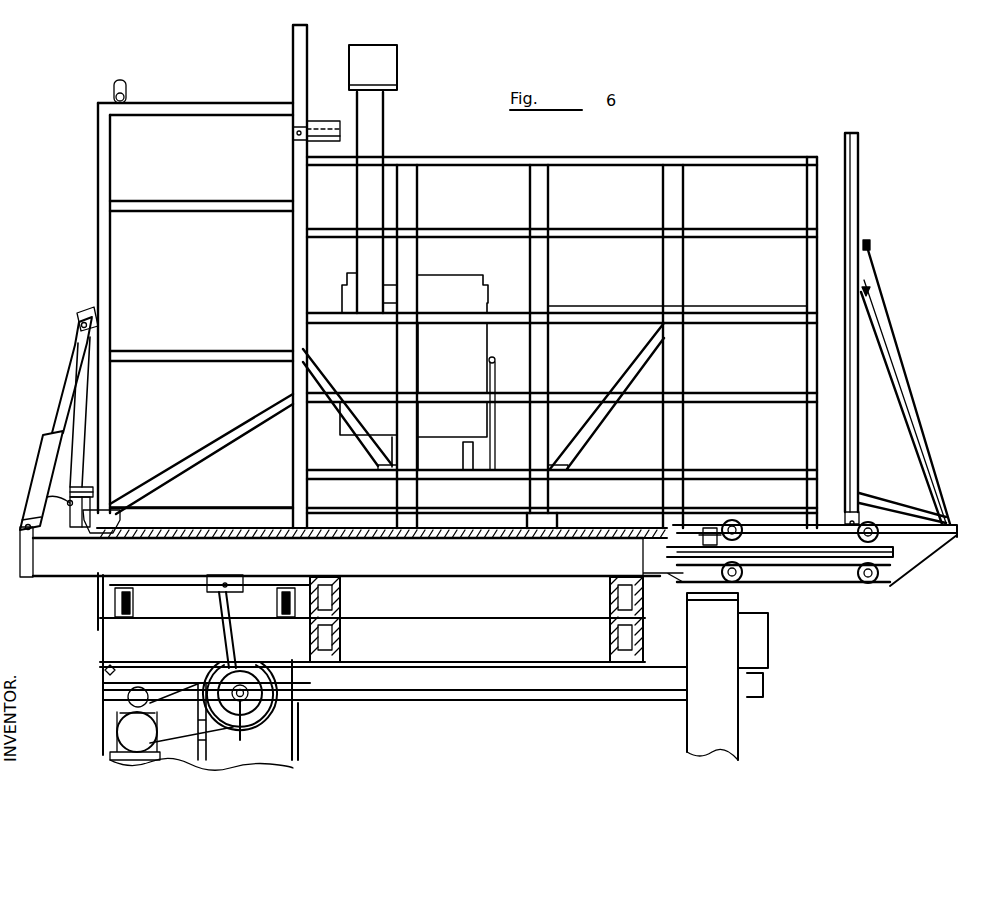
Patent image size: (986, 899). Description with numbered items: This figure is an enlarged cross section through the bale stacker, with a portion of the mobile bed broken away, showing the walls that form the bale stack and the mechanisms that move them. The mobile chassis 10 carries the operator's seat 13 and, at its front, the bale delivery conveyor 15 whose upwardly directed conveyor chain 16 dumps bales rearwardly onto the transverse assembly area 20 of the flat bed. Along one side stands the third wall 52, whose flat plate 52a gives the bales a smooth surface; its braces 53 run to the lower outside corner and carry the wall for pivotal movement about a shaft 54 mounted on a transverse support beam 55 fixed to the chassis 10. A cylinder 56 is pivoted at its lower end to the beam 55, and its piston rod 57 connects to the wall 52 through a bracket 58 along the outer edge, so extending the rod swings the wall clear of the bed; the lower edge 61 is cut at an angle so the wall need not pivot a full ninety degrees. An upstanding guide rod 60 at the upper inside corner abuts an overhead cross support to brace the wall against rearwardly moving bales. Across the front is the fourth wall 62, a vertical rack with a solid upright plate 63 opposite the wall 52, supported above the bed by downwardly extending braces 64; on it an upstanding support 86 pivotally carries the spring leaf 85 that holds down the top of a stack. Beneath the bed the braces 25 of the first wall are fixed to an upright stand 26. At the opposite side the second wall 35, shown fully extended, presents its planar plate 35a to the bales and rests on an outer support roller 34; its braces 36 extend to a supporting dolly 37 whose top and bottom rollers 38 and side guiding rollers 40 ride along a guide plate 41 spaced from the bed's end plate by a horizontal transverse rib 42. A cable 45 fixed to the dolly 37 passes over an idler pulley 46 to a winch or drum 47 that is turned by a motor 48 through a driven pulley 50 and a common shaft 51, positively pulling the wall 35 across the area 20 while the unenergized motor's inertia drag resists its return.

The mobile chassis 10 is at (340, 632).
The seat 13 is at (451, 367).
The bale delivery conveyor 15 is at (299, 734).
The conveyor chain 16 is at (197, 749).
The transverse assembly area 20 is at (337, 538).
The braces 25 is at (87, 401).
The upright stand 26 is at (86, 533).
The outer support roller 34 is at (846, 518).
The second wall 35 is at (859, 197).
The planar plate 35a is at (850, 208).
The braces 36 is at (918, 446).
The supporting dolly 37 is at (816, 576).
The top and bottom rollers 38 is at (733, 520).
The side guiding rollers 40 is at (706, 532).
The guide plate 41 is at (889, 567).
The horizontal transverse rib 42 is at (893, 552).
The cable 45 is at (217, 636).
The idler pulley 46 is at (226, 594).
The winch or drum 47 is at (256, 692).
The motor 48 is at (150, 743).
The driven pulley 50 is at (265, 668).
The common shaft 51 is at (240, 741).
The third wall 52 is at (97, 233).
The flat plate 52a is at (212, 303).
The braces 53 is at (206, 113).
The shaft 54 is at (47, 497).
The transverse support beam 55 is at (56, 578).
The cylinder 56 is at (46, 455).
The piston rod 57 is at (72, 362).
The bracket 58 is at (96, 309).
The guide rod 60 is at (297, 72).
The lower edge 61 is at (206, 456).
The fourth wall 62 is at (548, 157).
The upright plate 63 is at (275, 488).
The braces 64 is at (368, 448).
The spring leaf 85 is at (396, 78).
The upstanding support 86 is at (383, 137).